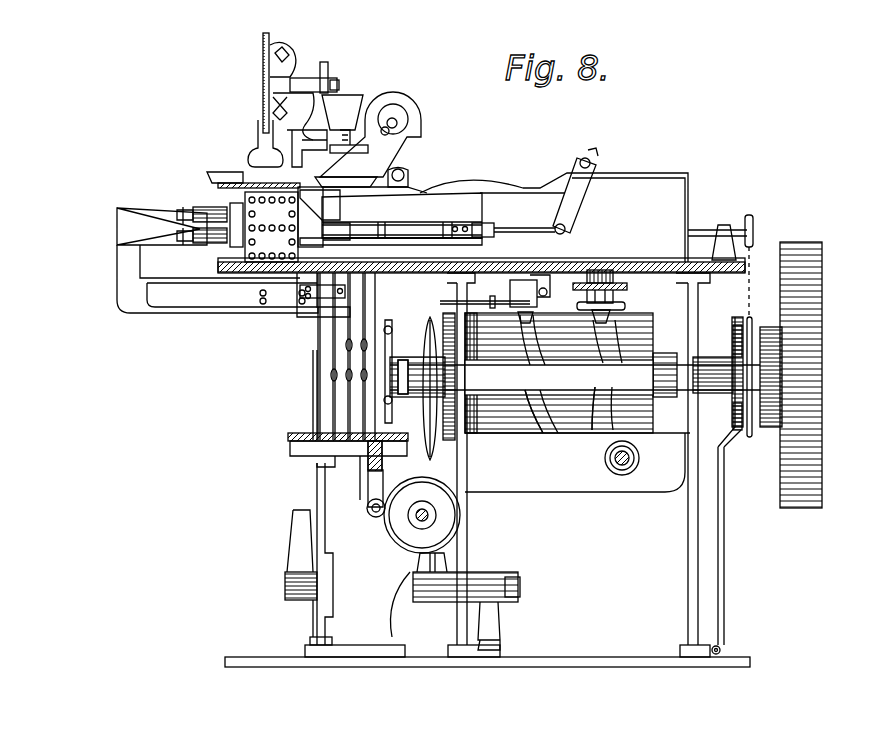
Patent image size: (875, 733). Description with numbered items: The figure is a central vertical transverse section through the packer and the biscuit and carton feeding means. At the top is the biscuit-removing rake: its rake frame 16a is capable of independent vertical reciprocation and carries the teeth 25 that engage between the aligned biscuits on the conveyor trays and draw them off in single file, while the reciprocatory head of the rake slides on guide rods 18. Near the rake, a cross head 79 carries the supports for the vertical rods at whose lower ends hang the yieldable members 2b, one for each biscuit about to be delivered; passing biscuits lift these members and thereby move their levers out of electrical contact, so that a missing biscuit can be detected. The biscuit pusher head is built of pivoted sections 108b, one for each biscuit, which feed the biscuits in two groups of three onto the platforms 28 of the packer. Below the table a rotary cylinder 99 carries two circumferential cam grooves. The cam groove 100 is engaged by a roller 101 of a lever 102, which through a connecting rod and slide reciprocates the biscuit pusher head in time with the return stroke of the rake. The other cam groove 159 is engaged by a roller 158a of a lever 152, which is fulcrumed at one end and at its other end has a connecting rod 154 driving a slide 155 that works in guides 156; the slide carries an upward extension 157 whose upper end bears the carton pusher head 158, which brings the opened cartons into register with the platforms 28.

The rake frame 16a is at (263, 52).
The guide rods 18 is at (282, 68).
The cross head 79 is at (333, 123).
The teeth 25 is at (253, 158).
The pusher head sections 108b is at (243, 170).
The yieldable members 2b is at (290, 178).
The upward extension 157 is at (128, 275).
The carton pusher head 158 is at (245, 228).
The platforms 28 is at (335, 290).
The guides 156 is at (400, 292).
The slide 155 is at (428, 298).
The connecting rod 154 is at (482, 298).
The lever 152 is at (530, 285).
The lever 102 is at (603, 278).
The roller 101 is at (612, 317).
The roller 158a is at (533, 323).
The rotary cylinder 99 is at (510, 433).
The cam groove 159 is at (553, 433).
The cam groove 100 is at (603, 433).